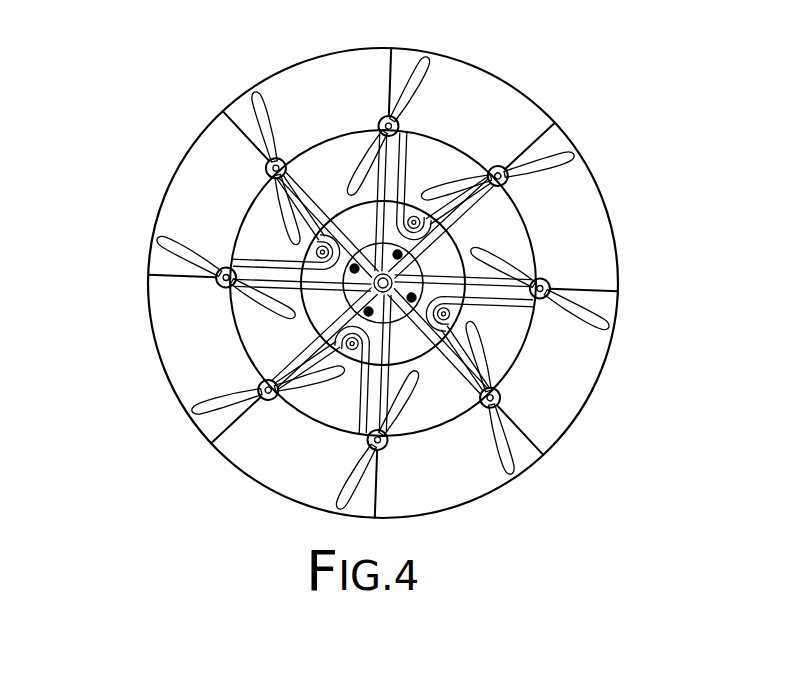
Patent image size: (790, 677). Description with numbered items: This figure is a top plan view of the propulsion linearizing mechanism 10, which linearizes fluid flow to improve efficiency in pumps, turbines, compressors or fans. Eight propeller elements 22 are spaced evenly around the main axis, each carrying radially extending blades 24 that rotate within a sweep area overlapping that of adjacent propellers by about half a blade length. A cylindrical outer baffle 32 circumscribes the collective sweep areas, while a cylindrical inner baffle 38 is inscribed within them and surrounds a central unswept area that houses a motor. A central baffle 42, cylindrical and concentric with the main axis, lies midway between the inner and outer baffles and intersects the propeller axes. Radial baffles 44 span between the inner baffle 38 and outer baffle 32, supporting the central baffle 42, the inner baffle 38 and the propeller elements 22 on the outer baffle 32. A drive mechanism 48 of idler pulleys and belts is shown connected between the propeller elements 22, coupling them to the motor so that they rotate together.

The propulsion linearizing mechanism 10 is at (127, 76).
The propeller element 22 is at (266, 168).
The blade 24 is at (263, 119).
The outer baffle 32 is at (140, 340).
The inner baffle 38 is at (453, 245).
The central baffle 42 is at (522, 353).
The radial baffle 44 is at (535, 147).
The drive mechanism 48 is at (412, 181).